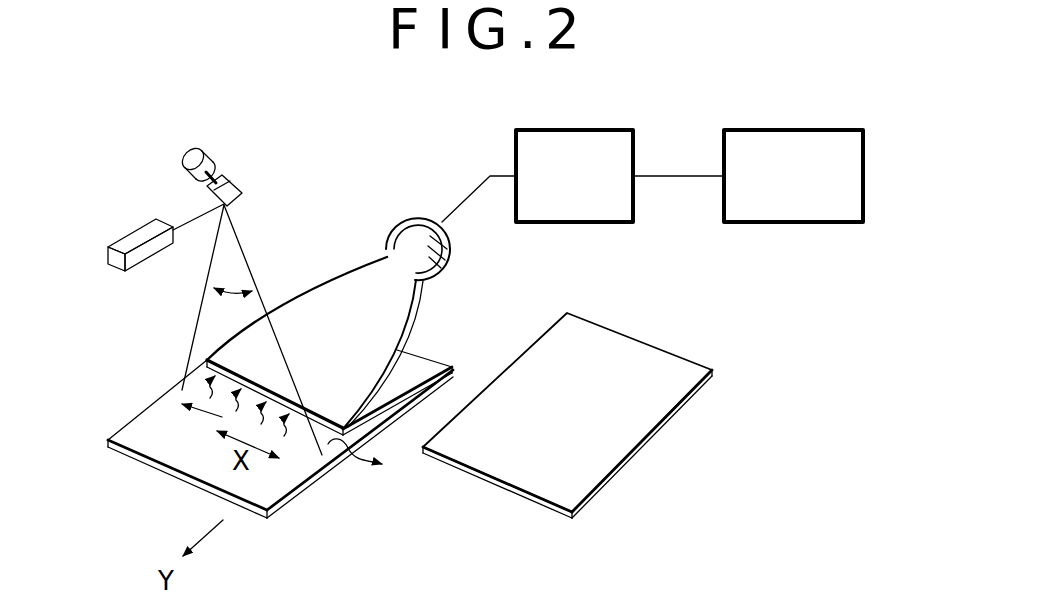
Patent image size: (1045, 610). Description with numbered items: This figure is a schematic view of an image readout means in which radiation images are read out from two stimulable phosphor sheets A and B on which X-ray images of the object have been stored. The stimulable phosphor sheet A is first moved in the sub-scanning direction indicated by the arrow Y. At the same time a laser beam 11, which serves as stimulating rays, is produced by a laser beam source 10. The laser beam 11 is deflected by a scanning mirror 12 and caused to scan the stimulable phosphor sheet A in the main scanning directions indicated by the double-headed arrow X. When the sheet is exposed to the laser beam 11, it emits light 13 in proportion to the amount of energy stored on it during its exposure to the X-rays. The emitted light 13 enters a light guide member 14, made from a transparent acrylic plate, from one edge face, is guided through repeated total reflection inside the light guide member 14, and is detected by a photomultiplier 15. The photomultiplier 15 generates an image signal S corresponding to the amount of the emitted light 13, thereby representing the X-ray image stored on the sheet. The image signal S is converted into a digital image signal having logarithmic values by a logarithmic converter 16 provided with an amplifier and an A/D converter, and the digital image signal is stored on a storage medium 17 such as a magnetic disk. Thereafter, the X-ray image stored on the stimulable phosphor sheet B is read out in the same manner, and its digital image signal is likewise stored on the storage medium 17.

The laser beam source 10 is at (140, 229).
The laser beam 11 is at (251, 267).
The scanning mirror 12 is at (233, 183).
The emitted light 13 is at (275, 391).
The light guide member 14 is at (367, 272).
The photomultiplier 15 is at (412, 220).
The logarithmic converter 16 is at (617, 129).
The storage medium 17 is at (813, 129).
The stimulable phosphor sheet A is at (421, 373).
The stimulable phosphor sheet B is at (641, 412).
The image signal S is at (466, 197).